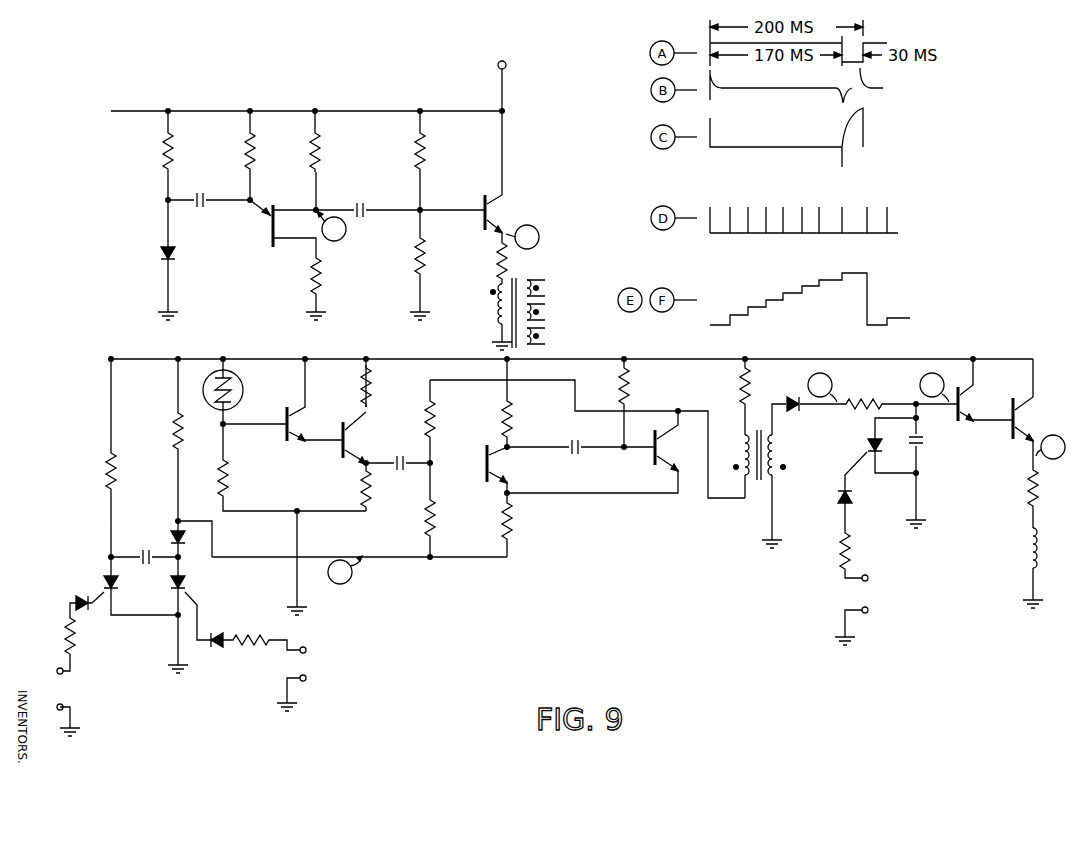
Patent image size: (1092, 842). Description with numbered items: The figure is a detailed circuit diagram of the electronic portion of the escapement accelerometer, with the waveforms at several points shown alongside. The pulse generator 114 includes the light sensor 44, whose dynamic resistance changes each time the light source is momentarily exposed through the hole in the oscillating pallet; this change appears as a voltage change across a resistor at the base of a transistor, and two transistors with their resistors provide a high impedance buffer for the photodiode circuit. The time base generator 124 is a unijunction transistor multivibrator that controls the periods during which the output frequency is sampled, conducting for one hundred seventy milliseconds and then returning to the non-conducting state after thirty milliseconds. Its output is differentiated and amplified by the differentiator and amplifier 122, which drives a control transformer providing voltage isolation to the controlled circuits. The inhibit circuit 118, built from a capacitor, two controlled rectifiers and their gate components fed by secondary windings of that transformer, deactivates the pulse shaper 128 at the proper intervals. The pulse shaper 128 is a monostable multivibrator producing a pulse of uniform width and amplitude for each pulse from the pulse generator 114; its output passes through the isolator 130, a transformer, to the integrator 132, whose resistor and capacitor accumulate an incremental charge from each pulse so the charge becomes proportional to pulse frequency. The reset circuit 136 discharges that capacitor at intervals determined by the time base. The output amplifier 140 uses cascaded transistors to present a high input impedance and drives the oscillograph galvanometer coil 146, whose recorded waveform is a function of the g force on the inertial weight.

The time base generator 124 is at (296, 96).
The differentiator and amplifier 122 is at (457, 95).
The pulse generator 114 is at (282, 350).
The inhibit circuit 118 is at (160, 491).
The pulse shaper 128 is at (641, 350).
The isolator 130 is at (805, 350).
The integrator 132 is at (910, 378).
The reset circuit 136 is at (833, 462).
The output amplifier 140 is at (1028, 351).
The light sensor 44 is at (242, 373).
The oscillograph galvanometer coil 146 is at (1056, 547).